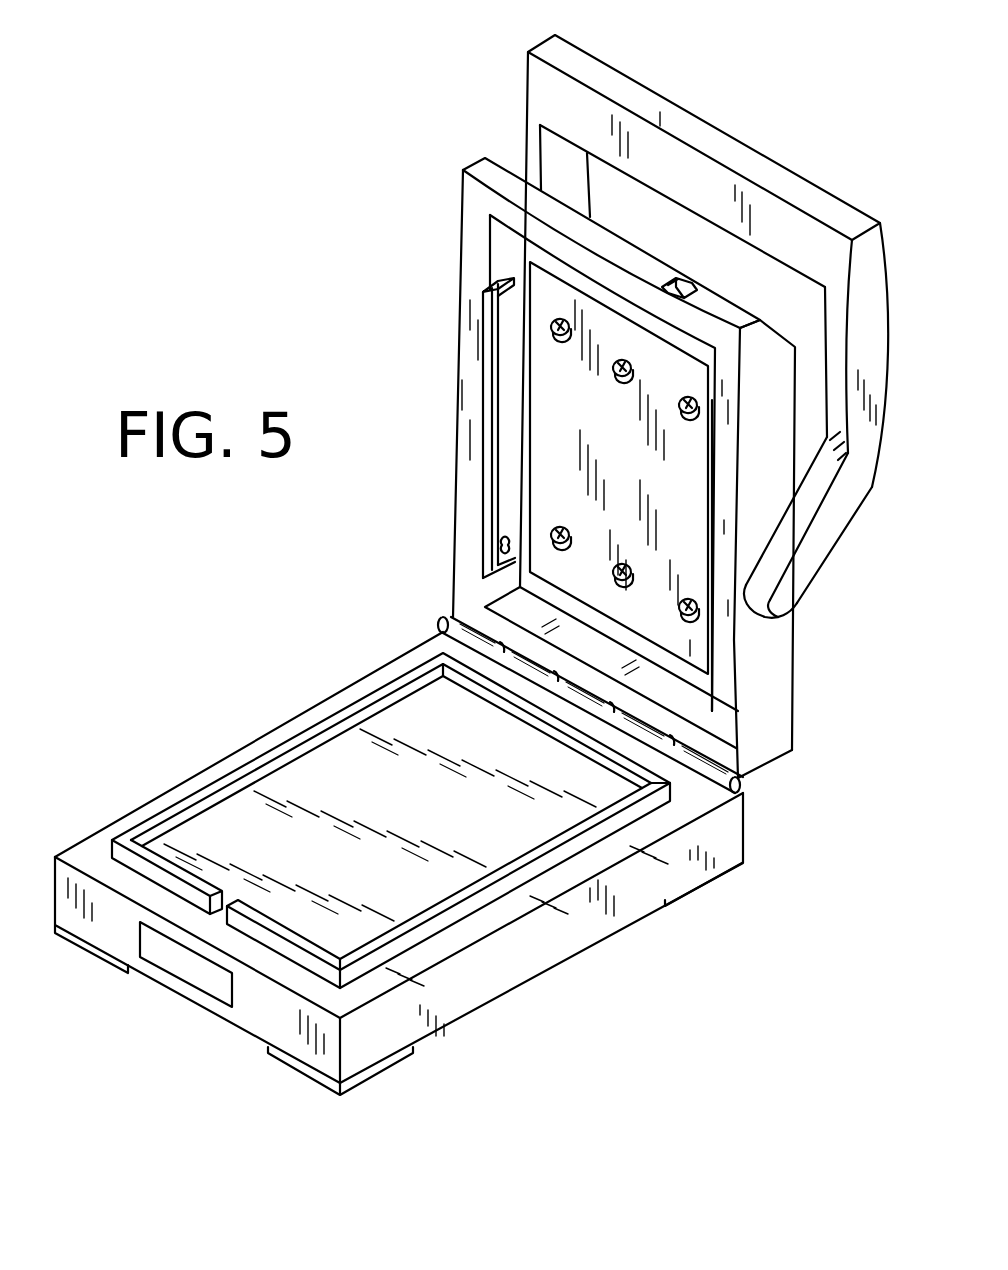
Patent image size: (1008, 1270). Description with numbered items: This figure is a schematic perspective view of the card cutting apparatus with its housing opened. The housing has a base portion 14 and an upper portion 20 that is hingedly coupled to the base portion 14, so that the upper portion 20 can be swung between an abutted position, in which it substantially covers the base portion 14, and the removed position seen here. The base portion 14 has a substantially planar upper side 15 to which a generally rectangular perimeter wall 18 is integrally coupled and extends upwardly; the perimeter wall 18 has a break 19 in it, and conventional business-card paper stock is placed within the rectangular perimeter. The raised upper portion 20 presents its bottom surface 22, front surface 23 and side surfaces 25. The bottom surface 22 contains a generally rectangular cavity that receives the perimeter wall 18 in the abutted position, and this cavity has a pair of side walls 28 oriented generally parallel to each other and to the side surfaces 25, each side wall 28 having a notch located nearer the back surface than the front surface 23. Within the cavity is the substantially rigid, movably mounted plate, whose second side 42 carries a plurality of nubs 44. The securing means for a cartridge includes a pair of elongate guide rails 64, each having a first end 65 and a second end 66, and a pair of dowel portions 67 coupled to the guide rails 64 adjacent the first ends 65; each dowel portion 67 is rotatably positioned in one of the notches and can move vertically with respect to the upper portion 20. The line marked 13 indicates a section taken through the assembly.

The section line 13 is at (570, 537).
The base portion 14 is at (53, 893).
The upper side 15 is at (85, 857).
The perimeter wall 18 is at (470, 907).
The break 19 is at (220, 907).
The upper portion 20 is at (768, 762).
The bottom surface 22 is at (723, 693).
The front surface 23 is at (497, 177).
The side surfaces 25 is at (765, 648).
The side walls 28 is at (505, 243).
The second side 42 is at (555, 427).
The nubs 44 is at (548, 328).
The guide rails 64 is at (503, 368).
The first end 65 is at (497, 565).
The second end 66 is at (503, 280).
The dowel portions 67 is at (503, 548).